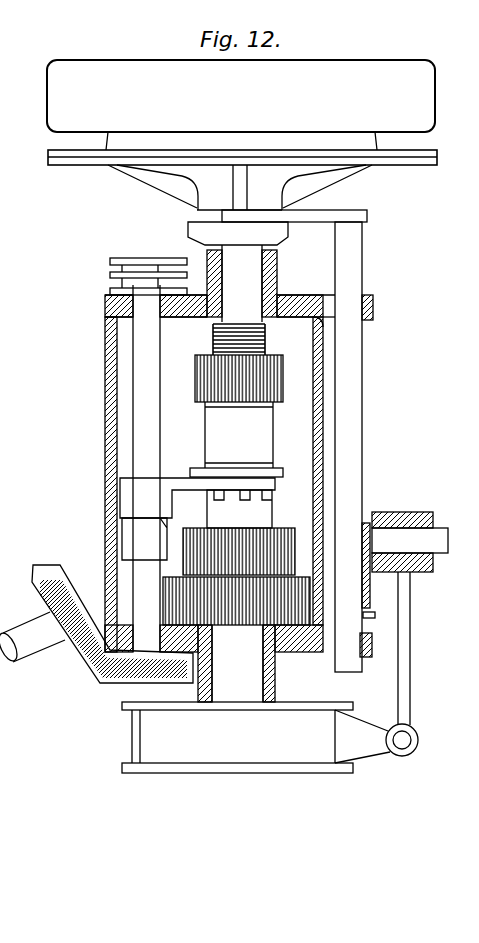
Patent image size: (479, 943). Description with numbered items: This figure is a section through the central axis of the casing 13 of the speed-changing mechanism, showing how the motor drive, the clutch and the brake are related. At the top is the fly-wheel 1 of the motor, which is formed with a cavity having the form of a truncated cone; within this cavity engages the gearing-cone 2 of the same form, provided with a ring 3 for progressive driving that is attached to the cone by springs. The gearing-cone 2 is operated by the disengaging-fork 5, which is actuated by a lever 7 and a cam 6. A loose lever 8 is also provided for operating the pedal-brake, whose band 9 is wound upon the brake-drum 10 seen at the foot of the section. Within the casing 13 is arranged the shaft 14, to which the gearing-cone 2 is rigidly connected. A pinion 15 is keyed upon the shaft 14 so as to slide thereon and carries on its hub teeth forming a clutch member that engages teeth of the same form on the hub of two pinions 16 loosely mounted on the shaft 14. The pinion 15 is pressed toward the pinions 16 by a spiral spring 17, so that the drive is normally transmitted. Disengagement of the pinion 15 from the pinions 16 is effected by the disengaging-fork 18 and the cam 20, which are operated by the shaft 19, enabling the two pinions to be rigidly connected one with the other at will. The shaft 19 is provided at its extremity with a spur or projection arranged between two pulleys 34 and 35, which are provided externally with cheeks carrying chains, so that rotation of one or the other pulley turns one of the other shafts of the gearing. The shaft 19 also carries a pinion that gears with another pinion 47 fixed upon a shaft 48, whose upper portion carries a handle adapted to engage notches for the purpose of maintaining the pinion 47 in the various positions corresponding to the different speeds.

The fly-wheel 1 is at (241, 105).
The gearing-cone 2 is at (240, 187).
The ring 3 is at (249, 159).
The disengaging-fork 5 is at (297, 441).
The cam 6 is at (357, 596).
The lever 7 is at (410, 547).
The loose lever 8 is at (404, 664).
The band 9 is at (362, 736).
The brake-drum 10 is at (237, 737).
The casing 13 is at (248, 396).
The shaft 14 is at (238, 272).
The pinion 15 is at (236, 439).
The pinions 16 is at (236, 596).
The spiral spring 17 is at (278, 328).
The disengaging-fork 18 is at (197, 498).
The shaft 19 is at (220, 468).
The cam 20 is at (144, 539).
The pulley 34 is at (148, 283).
The pulley 35 is at (148, 266).
The pinion 47 is at (112, 624).
The shaft 48 is at (32, 638).